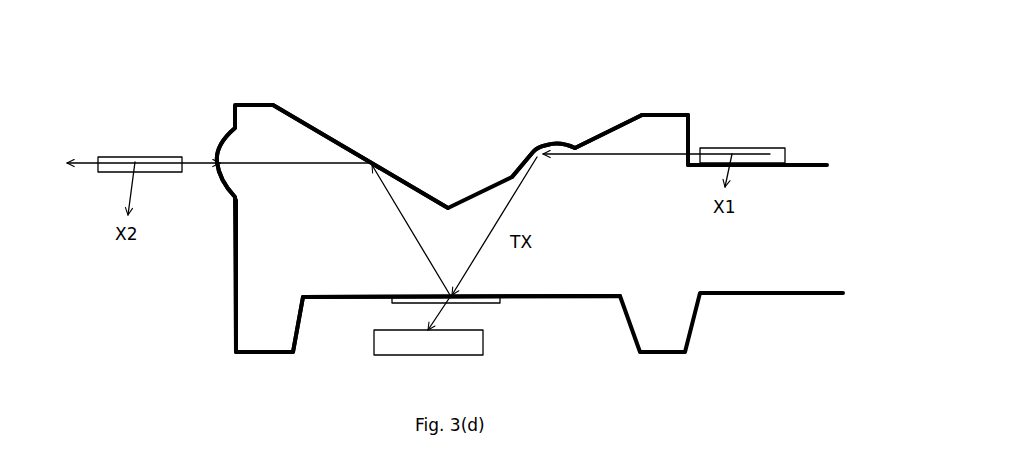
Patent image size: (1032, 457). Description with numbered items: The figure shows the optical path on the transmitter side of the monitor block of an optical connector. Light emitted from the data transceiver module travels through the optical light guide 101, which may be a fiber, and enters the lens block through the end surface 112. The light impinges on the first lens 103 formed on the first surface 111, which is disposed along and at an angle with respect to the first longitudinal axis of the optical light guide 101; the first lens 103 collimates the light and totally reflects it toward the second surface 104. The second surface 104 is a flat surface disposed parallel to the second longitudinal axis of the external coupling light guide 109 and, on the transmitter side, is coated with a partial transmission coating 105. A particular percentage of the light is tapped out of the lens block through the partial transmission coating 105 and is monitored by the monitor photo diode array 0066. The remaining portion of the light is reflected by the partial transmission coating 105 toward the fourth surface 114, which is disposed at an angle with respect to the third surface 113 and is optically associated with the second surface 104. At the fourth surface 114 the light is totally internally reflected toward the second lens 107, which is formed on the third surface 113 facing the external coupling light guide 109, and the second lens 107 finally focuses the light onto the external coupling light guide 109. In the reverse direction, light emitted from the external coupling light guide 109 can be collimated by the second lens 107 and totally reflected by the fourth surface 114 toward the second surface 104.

The optical light guide 101 is at (770, 148).
The first lens 103 is at (538, 145).
The second surface 104 is at (470, 298).
The partial transmission coating 105 is at (470, 303).
The second lens 107 is at (230, 137).
The external coupling light guide 109 is at (148, 158).
The first surface 111 is at (595, 135).
The end surface 112 is at (690, 135).
The third surface 113 is at (235, 298).
The fourth surface 114 is at (325, 133).
The monitor photo diode array 0066 is at (446, 339).